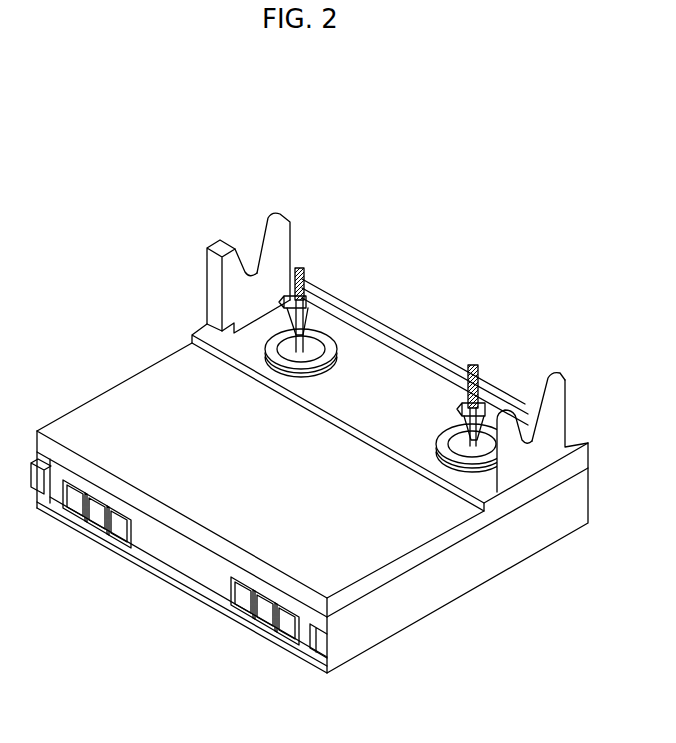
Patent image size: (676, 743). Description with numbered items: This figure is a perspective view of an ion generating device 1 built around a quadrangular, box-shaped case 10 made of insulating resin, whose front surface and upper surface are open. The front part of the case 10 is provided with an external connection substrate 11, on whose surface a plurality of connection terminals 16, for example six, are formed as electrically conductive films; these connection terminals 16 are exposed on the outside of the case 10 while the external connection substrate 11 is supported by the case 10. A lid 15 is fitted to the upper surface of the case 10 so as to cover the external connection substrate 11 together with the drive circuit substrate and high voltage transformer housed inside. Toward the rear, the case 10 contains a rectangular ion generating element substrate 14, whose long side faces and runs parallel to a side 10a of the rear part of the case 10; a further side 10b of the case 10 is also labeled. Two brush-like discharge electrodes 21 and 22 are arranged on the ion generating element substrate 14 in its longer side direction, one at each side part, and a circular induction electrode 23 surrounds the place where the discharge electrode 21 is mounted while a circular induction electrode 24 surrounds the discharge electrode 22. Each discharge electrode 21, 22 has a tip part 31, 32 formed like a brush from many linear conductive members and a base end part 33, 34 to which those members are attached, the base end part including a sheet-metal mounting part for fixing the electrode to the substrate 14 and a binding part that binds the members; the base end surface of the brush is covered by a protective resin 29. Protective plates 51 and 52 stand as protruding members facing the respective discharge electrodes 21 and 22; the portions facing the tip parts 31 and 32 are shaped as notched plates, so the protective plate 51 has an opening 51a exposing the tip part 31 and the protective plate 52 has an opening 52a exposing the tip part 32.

The ion generating device 1 is at (572, 138).
The case 10 is at (522, 558).
The side of the rear part of the case 10a is at (165, 581).
The side face of housing 10b is at (465, 585).
The external connection substrate 11 is at (212, 580).
The ion generating element substrate 14 is at (408, 372).
The lid 15 is at (110, 398).
The connection terminals 16 is at (117, 527).
The discharge electrode 21 is at (343, 283).
The discharge electrode 22 is at (517, 356).
The induction electrode 23 is at (331, 360).
The induction electrode 24 is at (444, 440).
The protective resin 29 is at (284, 302).
The tip part 31 is at (305, 272).
The tip part 32 is at (481, 372).
The base end part 33 is at (306, 318).
The base end part 34 is at (488, 405).
The protective plate 51 is at (206, 277).
The opening 51a is at (263, 242).
The protective plate 52 is at (568, 402).
The opening 52a is at (537, 396).